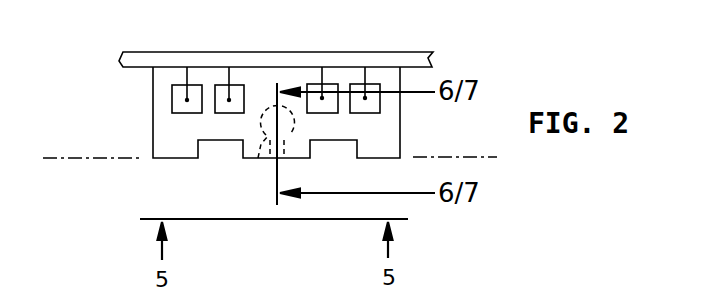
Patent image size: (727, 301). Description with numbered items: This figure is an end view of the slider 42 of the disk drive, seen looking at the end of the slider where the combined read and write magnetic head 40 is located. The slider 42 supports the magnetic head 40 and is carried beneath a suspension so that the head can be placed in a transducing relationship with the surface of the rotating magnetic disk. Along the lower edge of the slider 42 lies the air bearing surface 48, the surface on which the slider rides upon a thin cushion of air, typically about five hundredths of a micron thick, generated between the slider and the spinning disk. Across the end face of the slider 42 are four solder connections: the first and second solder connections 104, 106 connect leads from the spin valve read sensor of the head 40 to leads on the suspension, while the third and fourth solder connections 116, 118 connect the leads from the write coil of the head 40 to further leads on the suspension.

The slider 42 is at (152, 100).
The first solder connection 104 is at (172, 87).
The third solder connection 116 is at (215, 87).
The fourth solder connection 118 is at (307, 84).
The second solder connection 106 is at (350, 84).
The magnetic head 40 is at (260, 160).
The air bearing surface (ABS) 48 is at (75, 158).